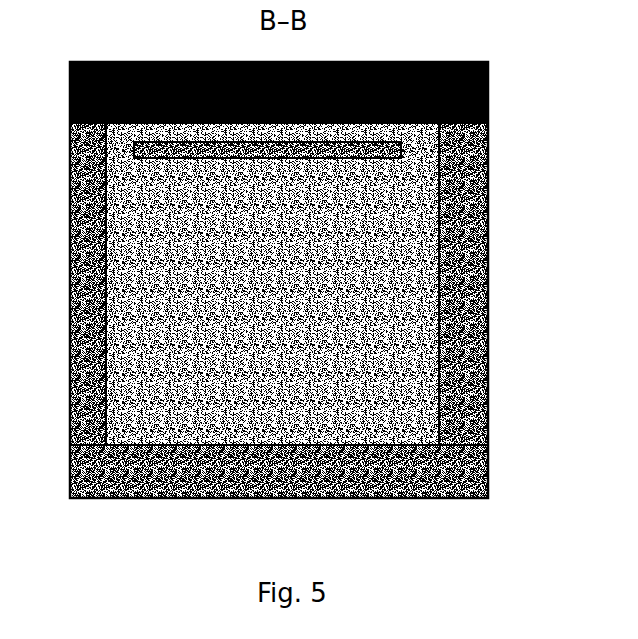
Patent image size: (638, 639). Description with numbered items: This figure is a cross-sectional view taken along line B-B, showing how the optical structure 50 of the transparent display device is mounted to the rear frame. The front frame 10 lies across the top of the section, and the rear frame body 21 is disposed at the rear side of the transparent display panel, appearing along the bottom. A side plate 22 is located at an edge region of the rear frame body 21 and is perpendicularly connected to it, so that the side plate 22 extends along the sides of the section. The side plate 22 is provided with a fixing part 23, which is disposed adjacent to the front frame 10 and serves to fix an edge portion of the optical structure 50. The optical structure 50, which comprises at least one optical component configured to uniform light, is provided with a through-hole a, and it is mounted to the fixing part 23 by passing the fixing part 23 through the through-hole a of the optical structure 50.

The front frame 10 is at (468, 122).
The rear frame body 21 is at (413, 469).
The side plate 22 is at (450, 395).
The fixing part 23 is at (401, 157).
The optical structure 50 is at (423, 313).
The through-hole a is at (148, 160).